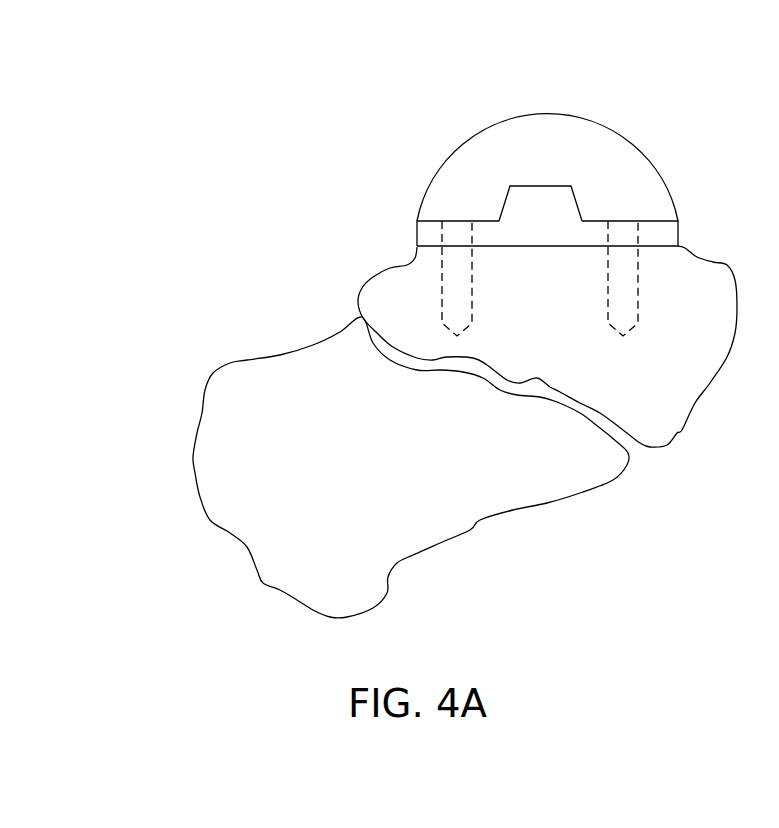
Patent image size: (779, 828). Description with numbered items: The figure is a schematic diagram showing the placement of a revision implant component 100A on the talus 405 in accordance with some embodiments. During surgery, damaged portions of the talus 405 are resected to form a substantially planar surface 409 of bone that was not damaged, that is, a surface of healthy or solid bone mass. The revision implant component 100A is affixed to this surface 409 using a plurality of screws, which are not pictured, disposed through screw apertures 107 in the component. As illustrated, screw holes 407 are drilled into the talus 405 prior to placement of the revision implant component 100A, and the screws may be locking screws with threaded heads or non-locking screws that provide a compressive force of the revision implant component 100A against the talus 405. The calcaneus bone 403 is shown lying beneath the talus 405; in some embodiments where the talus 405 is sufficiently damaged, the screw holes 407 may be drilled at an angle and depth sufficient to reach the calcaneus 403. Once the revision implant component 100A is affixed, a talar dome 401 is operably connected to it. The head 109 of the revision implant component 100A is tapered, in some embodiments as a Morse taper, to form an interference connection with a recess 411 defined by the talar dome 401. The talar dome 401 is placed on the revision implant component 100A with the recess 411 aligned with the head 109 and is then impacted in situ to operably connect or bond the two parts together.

The revision implant component 100A is at (679, 228).
The talar dome 401 is at (607, 128).
The recess 411 is at (568, 167).
The head 109 is at (528, 183).
The screw apertures 107 is at (457, 232).
The screw holes 407 is at (475, 325).
The substantially planar surface 409 is at (503, 248).
The talus 405 is at (666, 314).
The calcaneus bone 403 is at (297, 474).